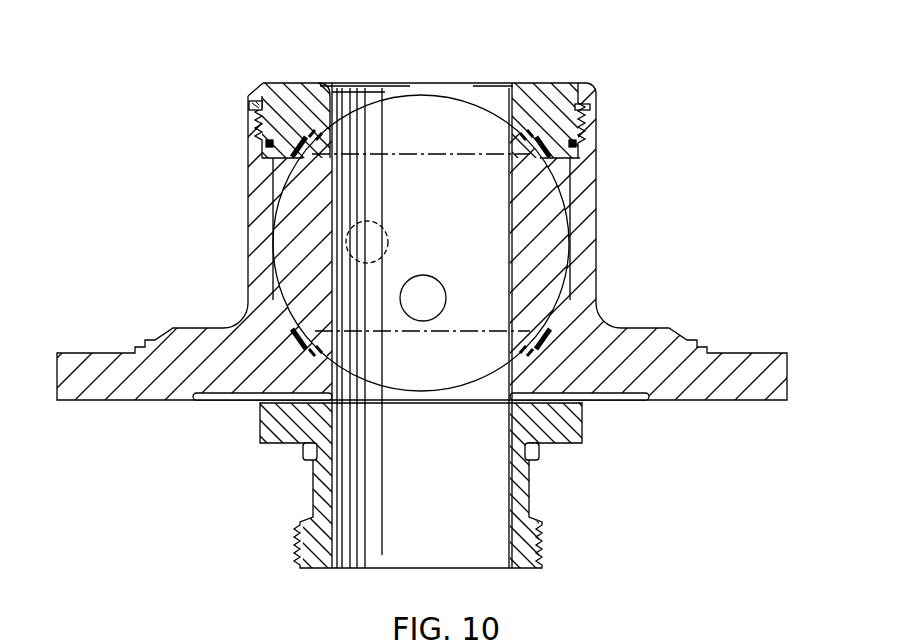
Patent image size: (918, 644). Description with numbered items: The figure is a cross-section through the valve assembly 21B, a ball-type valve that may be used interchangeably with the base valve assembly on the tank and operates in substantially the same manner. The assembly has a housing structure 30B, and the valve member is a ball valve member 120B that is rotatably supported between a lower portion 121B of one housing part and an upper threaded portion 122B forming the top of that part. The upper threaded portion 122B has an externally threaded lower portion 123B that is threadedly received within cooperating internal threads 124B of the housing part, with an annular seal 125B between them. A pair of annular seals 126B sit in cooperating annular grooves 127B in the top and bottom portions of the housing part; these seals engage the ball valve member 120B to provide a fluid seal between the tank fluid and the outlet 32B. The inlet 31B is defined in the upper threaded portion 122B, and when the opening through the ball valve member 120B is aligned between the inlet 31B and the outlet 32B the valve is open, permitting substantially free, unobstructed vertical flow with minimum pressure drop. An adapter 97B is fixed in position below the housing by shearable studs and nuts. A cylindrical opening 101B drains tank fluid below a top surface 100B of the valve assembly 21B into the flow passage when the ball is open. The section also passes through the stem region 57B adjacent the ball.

The valve assembly 21B is at (680, 111).
The housing structure 30B is at (597, 180).
The inlet 31B is at (505, 98).
The outlet 32B is at (503, 373).
The shaft 57B is at (497, 167).
The adapter 97B is at (547, 508).
The top surface 100B is at (563, 82).
The cylindrical opening 101B is at (424, 280).
The ball valve member 120B is at (287, 218).
The lower portion 121B is at (258, 322).
The upper threaded portion 122B is at (277, 88).
The externally threaded lower portion 123B is at (268, 136).
The internal threads 124B is at (262, 120).
The annular seal 125B is at (252, 104).
The annular seals 126B is at (305, 140).
The annular grooves 127B is at (300, 132).